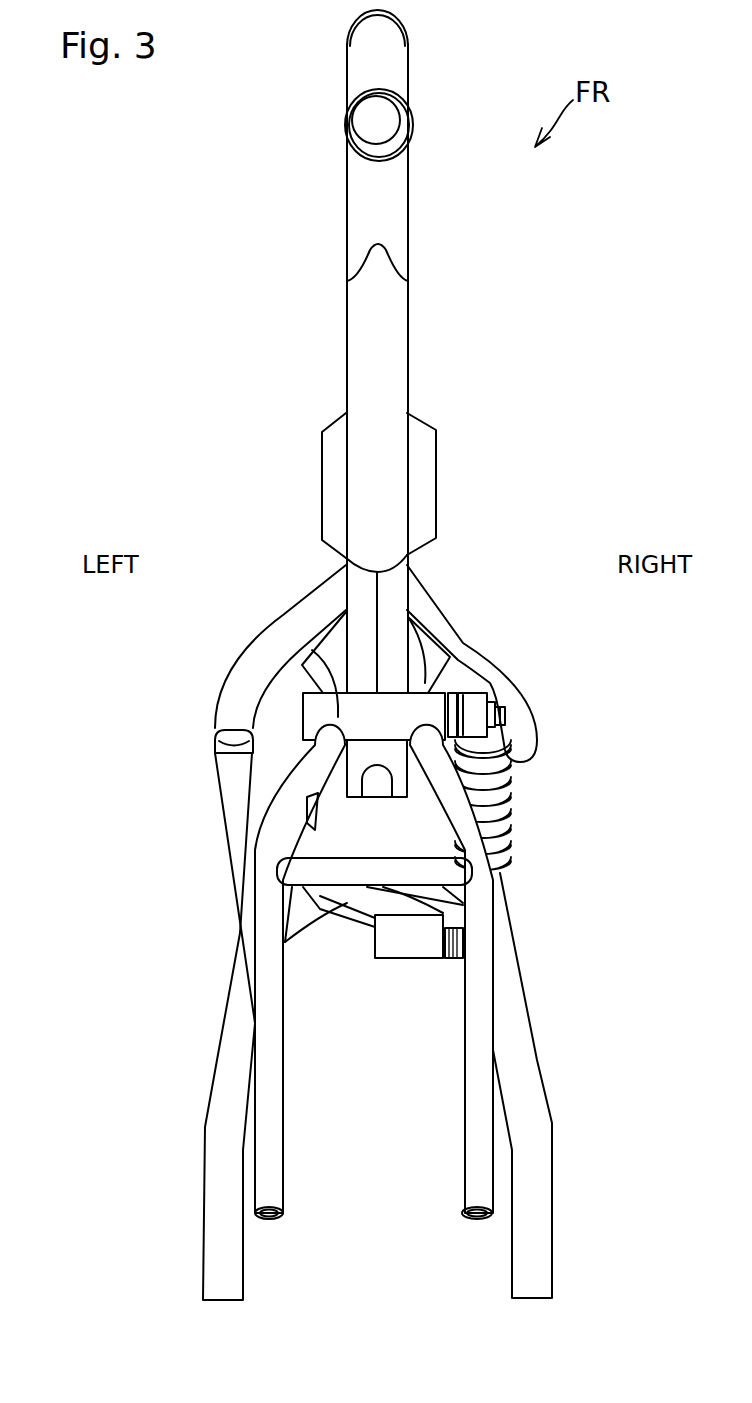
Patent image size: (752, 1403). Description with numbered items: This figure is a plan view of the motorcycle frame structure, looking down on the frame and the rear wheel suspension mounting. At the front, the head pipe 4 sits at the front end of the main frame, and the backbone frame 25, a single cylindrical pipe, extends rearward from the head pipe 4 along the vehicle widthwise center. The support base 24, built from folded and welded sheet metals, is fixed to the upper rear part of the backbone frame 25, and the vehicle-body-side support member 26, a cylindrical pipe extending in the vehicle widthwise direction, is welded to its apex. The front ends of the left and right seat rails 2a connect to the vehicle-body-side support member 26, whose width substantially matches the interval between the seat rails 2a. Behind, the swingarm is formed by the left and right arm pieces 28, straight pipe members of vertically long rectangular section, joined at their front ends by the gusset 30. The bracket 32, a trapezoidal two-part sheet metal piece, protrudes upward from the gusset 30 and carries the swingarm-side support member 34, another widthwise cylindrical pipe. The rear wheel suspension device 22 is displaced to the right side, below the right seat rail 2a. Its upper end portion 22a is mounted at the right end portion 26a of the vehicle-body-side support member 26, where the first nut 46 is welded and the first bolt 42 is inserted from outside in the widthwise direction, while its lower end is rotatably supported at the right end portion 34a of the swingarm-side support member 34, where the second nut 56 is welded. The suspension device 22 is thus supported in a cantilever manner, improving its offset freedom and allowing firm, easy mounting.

The head pipe 4 is at (395, 68).
The backbone frame 25 is at (403, 318).
The support base 24 is at (390, 595).
The vehicle-body-side support member 26 is at (338, 705).
The right end portion 26a is at (452, 700).
The upper end portion 22a is at (470, 700).
The first nut 46 is at (462, 717).
The first bolt 42 is at (503, 722).
The rear wheel suspension device 22 is at (488, 795).
The gusset 30 is at (320, 810).
The seat rails 2a is at (272, 843).
The bracket 32 is at (347, 902).
The swingarm-side support member 34 is at (387, 953).
The right end portion 34a is at (440, 955).
The second nut 56 is at (453, 958).
The arm pieces 28 is at (217, 1160).